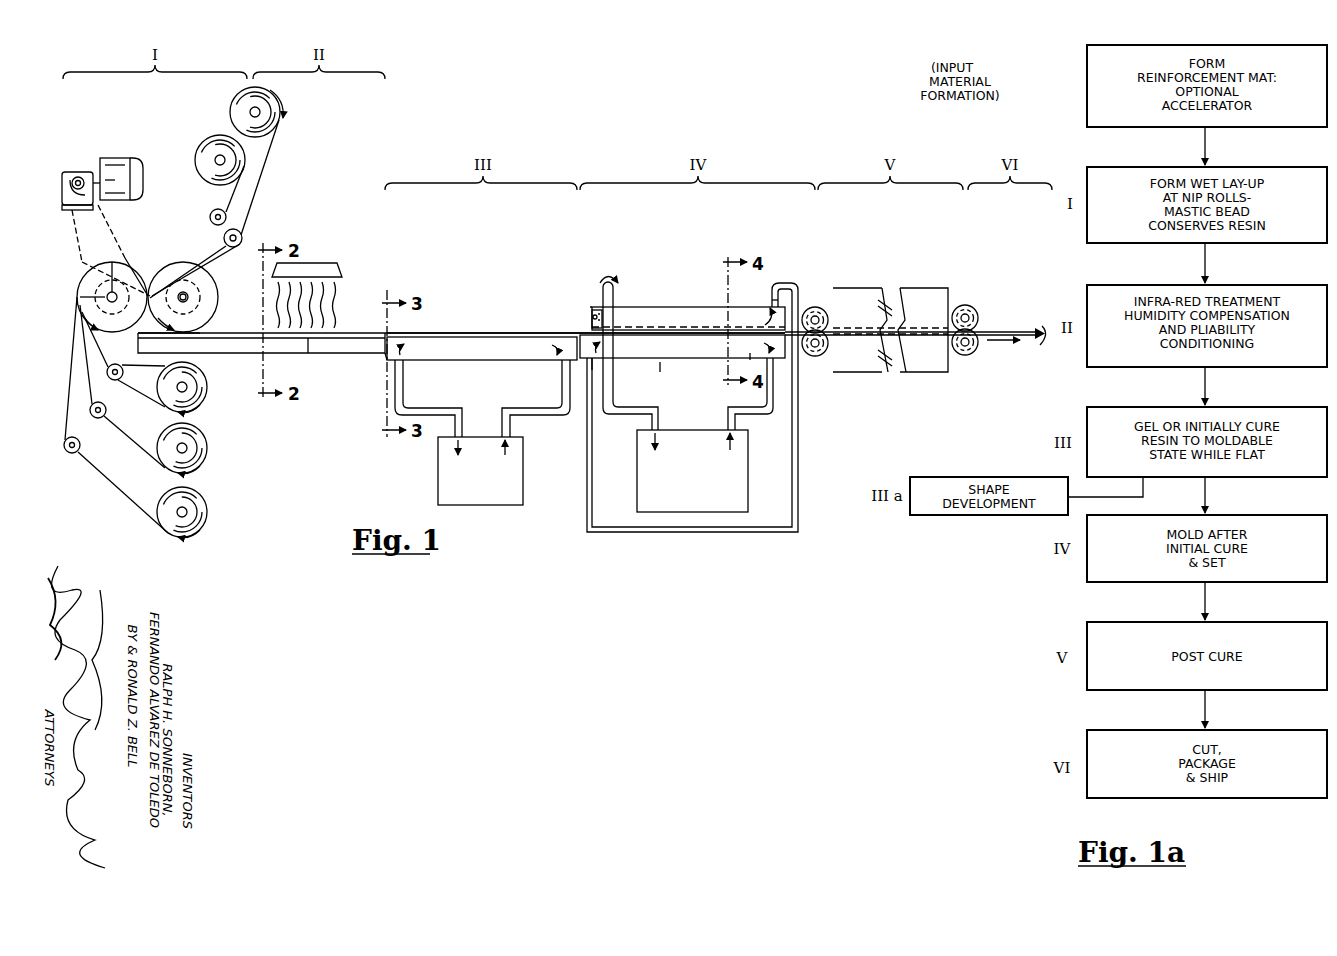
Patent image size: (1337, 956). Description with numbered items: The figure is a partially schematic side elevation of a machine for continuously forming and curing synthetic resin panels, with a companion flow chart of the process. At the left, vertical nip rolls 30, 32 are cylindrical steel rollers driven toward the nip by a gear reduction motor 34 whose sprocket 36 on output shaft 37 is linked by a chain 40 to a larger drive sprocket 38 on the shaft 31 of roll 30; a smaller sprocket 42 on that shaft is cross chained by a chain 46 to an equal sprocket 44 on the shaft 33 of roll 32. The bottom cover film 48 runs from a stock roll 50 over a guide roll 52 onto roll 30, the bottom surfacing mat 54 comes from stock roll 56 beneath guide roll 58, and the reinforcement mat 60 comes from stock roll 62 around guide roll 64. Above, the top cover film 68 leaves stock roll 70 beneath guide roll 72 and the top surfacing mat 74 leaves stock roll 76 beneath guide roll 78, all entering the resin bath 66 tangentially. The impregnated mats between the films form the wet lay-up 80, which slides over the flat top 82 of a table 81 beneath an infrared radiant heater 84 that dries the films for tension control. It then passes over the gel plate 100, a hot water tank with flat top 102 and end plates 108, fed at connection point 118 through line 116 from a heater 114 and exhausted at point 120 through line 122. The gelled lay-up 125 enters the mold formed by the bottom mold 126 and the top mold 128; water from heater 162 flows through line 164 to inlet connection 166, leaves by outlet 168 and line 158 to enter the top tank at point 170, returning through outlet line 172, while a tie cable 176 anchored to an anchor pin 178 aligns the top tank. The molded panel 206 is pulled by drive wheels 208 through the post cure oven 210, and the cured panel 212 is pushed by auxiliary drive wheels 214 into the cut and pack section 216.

The nip roll 30 is at (97, 328).
The shaft 31 is at (112, 268).
The nip roll 32 is at (212, 286).
The shaft 33 is at (190, 297).
The gear reduction motor 34 is at (128, 158).
The sprocket 36 is at (88, 170).
The output shaft 37 is at (72, 176).
The drive sprocket 38 is at (88, 276).
The chain 40 is at (72, 243).
The sprocket 42 is at (84, 296).
The sprocket 44 is at (203, 283).
The cross chain 46 is at (148, 262).
The bottom cover film 48 is at (148, 393).
The stock roll 50 is at (208, 387).
The guide roll 52 is at (123, 372).
The bottom surfacing mat 54 is at (145, 459).
The stock roll 56 is at (208, 448).
The guide roll 58 is at (104, 414).
The reinforcement mat 60 is at (118, 505).
The stock roll 62 is at (208, 512).
The guide roll 64 is at (80, 445).
The resin bath 66 is at (162, 268).
The top cover film 68 is at (270, 165).
The stock roll 70 is at (231, 112).
The guide roll 72 is at (244, 234).
The top surfacing mat 74 is at (232, 194).
The stock roll 76 is at (202, 150).
The guide roll 78 is at (210, 215).
The wet lay-up 80 is at (208, 328).
The table 81 is at (316, 354).
The flat top 82 is at (307, 354).
The infrared radiant heater 84 is at (328, 263).
The gel plate 100 is at (472, 272).
The flat top 102 is at (448, 338).
The end plate 108 is at (385, 355).
The heater 114 is at (438, 463).
The line 116 is at (538, 408).
The connection point 118 is at (560, 364).
The water exhaust point 120 is at (405, 364).
The line 122 is at (410, 408).
The gelled lay-up 125 is at (578, 330).
The bottom mold 126 is at (668, 366).
The top mold 128 is at (701, 262).
The line 158 is at (614, 533).
The heater 162 is at (752, 458).
The line 164 is at (744, 408).
The inlet connection 166 is at (742, 361).
The outlet 168 is at (600, 363).
The entrance point 170 is at (770, 302).
The outlet line 172 is at (618, 298).
The tie cable 176 is at (600, 308).
The anchor pin 178 is at (592, 317).
The molded panel 206 is at (802, 357).
The drive wheels 208 is at (810, 308).
The oven 210 is at (892, 374).
The panel 212 is at (1016, 334).
The auxiliary drive wheels 214 is at (968, 305).
The cut and pack section 216 is at (987, 344).